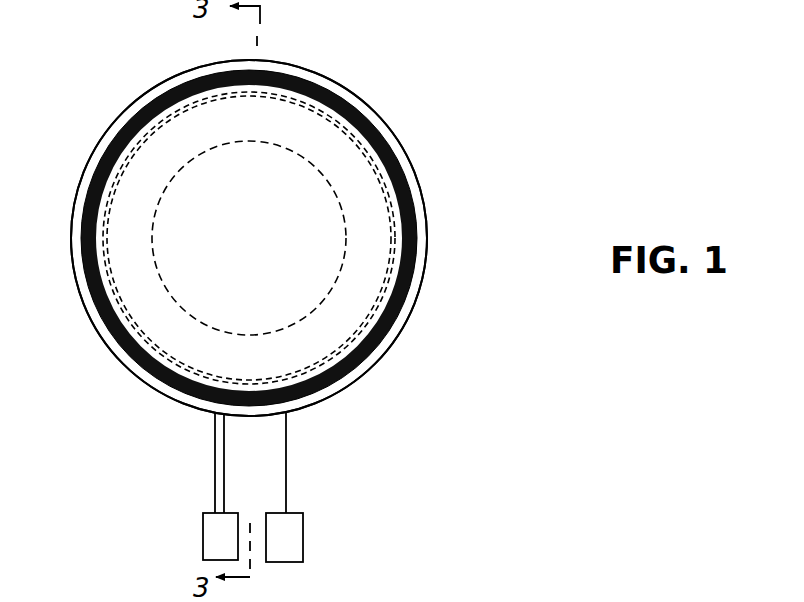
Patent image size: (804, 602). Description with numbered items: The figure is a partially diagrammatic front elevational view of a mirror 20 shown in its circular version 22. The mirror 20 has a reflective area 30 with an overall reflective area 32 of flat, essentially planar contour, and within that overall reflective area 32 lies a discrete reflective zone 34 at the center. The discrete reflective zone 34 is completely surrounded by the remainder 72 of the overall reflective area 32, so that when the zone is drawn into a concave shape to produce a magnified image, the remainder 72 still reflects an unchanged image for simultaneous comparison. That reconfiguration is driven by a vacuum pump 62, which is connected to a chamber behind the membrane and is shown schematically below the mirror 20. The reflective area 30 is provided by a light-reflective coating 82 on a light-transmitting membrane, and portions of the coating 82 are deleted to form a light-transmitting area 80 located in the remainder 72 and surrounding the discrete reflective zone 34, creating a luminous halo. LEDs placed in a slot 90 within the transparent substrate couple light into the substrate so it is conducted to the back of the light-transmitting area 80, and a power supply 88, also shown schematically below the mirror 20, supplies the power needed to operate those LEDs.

The mirror 20 is at (126, 104).
The circular version 22 is at (75, 200).
The reflective area 30 is at (280, 371).
The overall reflective area 32 is at (368, 222).
The discrete reflective zone 34 is at (258, 252).
The vacuum pump 62 is at (203, 531).
The remainder of the overall reflective area 72 is at (328, 365).
The light-transmitting area 80 is at (408, 290).
The light-reflective coating 82 is at (288, 128).
The power supply 88 is at (303, 532).
The slot 90 is at (372, 110).